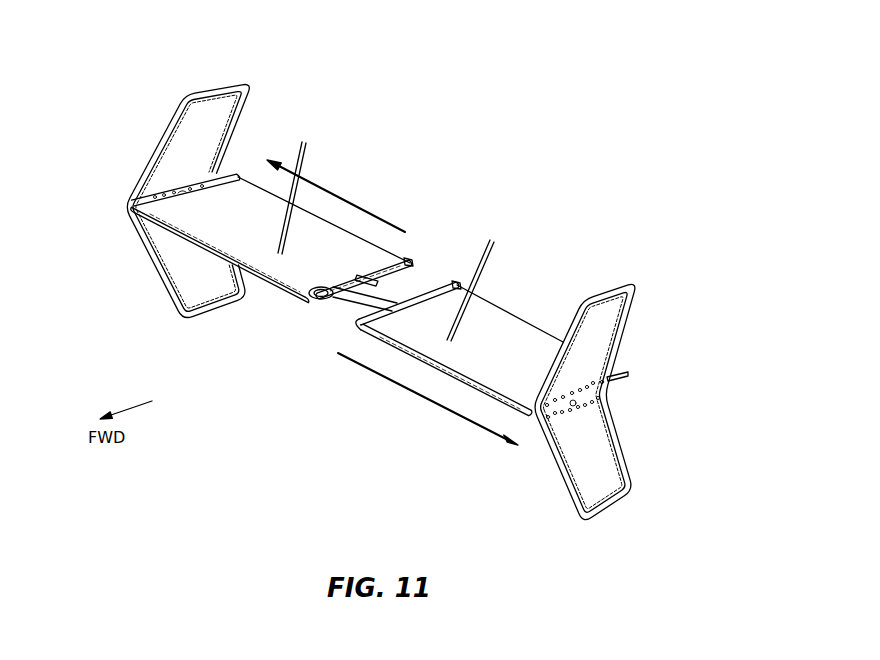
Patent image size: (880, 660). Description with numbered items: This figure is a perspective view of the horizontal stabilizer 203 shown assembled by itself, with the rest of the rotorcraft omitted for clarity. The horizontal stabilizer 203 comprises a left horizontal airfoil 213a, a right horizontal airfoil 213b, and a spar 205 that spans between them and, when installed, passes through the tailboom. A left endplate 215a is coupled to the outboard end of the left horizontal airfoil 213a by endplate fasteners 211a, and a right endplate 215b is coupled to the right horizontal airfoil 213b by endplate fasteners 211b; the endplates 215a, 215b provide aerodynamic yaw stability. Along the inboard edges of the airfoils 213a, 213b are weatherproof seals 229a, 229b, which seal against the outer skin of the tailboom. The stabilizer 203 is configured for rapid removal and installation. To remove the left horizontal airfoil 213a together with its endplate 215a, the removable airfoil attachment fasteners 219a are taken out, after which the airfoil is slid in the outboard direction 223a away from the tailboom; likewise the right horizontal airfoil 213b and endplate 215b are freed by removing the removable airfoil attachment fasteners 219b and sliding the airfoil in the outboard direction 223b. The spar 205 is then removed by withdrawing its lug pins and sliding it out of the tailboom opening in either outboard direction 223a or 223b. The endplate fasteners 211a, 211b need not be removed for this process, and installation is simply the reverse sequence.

The horizontal stabilizer 203 is at (590, 148).
The spar 205 is at (353, 300).
The endplate fasteners 211a is at (625, 392).
The endplate fasteners 211b is at (140, 190).
The left horizontal airfoil 213a is at (503, 340).
The right horizontal airfoil 213b is at (293, 270).
The left endplate 215a is at (650, 280).
The right endplate 215b is at (168, 127).
The removable airfoil attachment fasteners 219a is at (490, 240).
The removable airfoil attachment fasteners 219b is at (302, 142).
The outboard direction 223a is at (443, 410).
The outboard direction 223b is at (330, 192).
The weatherproof seal 229a is at (452, 285).
The weatherproof seal 229b is at (408, 262).